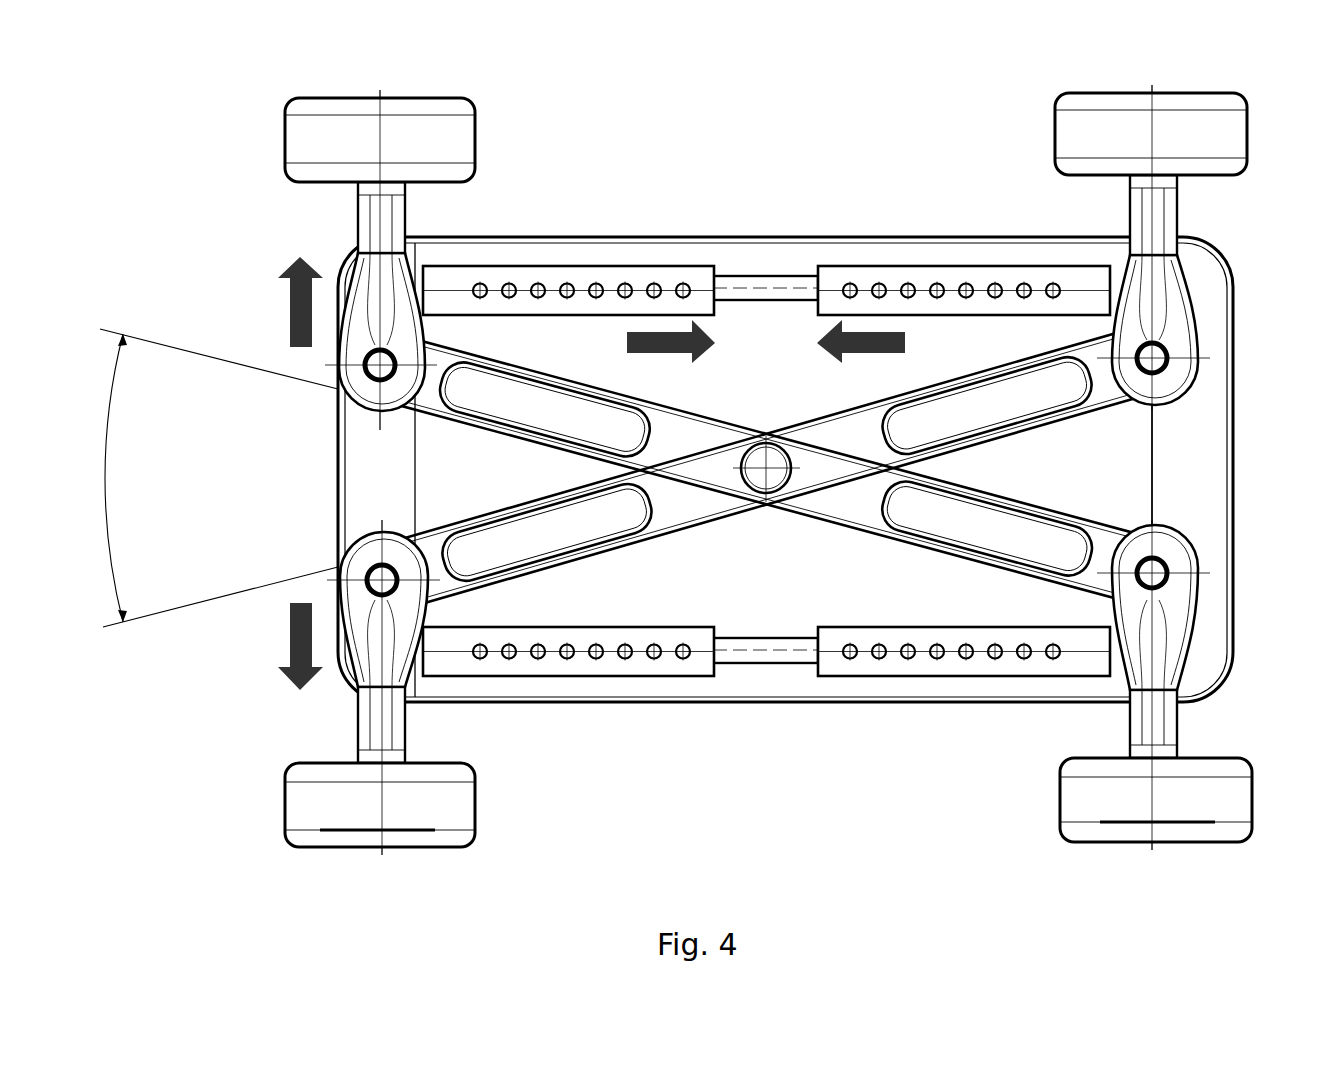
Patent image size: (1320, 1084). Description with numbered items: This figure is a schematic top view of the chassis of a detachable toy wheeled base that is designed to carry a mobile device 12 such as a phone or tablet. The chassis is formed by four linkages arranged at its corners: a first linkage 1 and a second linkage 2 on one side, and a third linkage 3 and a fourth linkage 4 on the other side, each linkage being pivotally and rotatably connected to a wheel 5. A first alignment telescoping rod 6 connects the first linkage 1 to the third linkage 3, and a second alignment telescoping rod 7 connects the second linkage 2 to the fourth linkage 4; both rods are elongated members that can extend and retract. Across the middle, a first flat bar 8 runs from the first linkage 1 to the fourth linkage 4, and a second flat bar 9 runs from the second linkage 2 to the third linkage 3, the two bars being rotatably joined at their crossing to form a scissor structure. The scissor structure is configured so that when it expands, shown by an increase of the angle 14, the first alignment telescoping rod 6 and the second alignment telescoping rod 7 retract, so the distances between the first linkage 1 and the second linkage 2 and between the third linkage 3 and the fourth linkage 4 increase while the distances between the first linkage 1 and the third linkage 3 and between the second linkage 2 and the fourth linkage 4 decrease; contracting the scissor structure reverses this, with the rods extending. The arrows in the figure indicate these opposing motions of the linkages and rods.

The first linkage 1 is at (405, 612).
The second linkage 2 is at (403, 333).
The third linkage 3 is at (1165, 617).
The fourth linkage 4 is at (1170, 328).
The wheel 5 is at (430, 146).
The first alignment telescoping rod 6 is at (857, 663).
The second alignment telescoping rod 7 is at (838, 268).
The first flat bar 8 is at (668, 505).
The second flat bar 9 is at (883, 512).
The mobile device 12 is at (694, 688).
The angle 14 is at (137, 393).